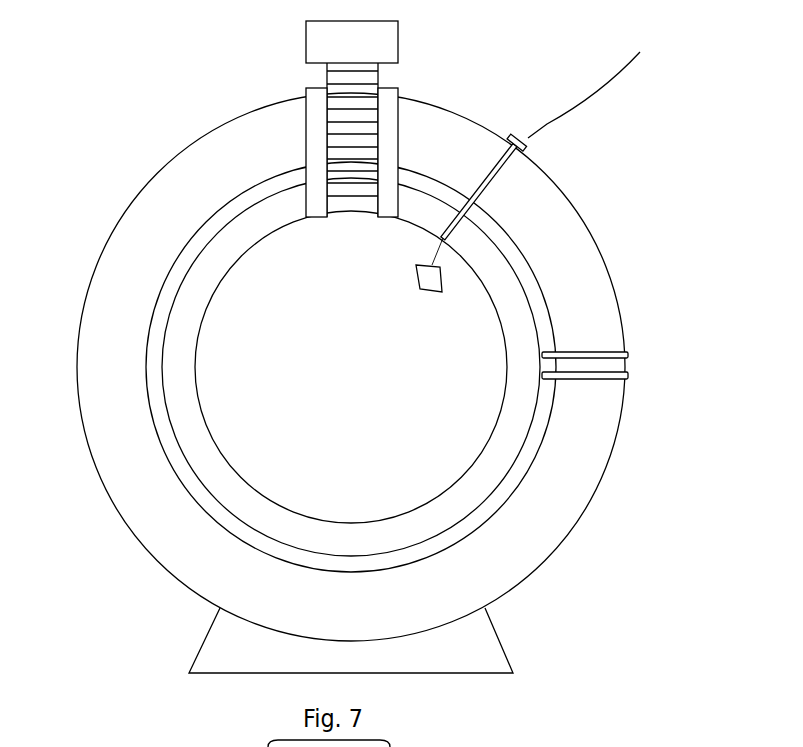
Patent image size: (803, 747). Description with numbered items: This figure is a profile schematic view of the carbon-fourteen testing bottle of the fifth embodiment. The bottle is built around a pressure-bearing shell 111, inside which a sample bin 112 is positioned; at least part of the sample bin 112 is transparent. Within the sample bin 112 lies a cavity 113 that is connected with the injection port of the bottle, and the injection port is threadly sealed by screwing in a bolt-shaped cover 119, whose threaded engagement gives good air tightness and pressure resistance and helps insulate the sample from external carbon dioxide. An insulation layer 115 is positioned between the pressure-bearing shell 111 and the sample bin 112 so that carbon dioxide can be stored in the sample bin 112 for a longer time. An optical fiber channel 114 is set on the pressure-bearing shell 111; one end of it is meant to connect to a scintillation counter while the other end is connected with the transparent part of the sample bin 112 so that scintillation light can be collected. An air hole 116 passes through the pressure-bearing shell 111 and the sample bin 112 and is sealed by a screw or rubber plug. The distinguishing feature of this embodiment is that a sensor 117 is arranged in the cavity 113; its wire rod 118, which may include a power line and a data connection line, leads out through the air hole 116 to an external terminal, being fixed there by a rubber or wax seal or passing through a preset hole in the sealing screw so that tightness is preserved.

The pressure-bearing shell 111 is at (168, 205).
The sample bin 112 is at (460, 490).
The cavity 113 is at (235, 397).
The optical fiber channel 114 is at (604, 364).
The insulation layer 115 is at (523, 455).
The air hole 116 is at (456, 210).
The sensor 117 is at (432, 278).
The wire rod 118 is at (547, 124).
The cover 119 is at (352, 42).